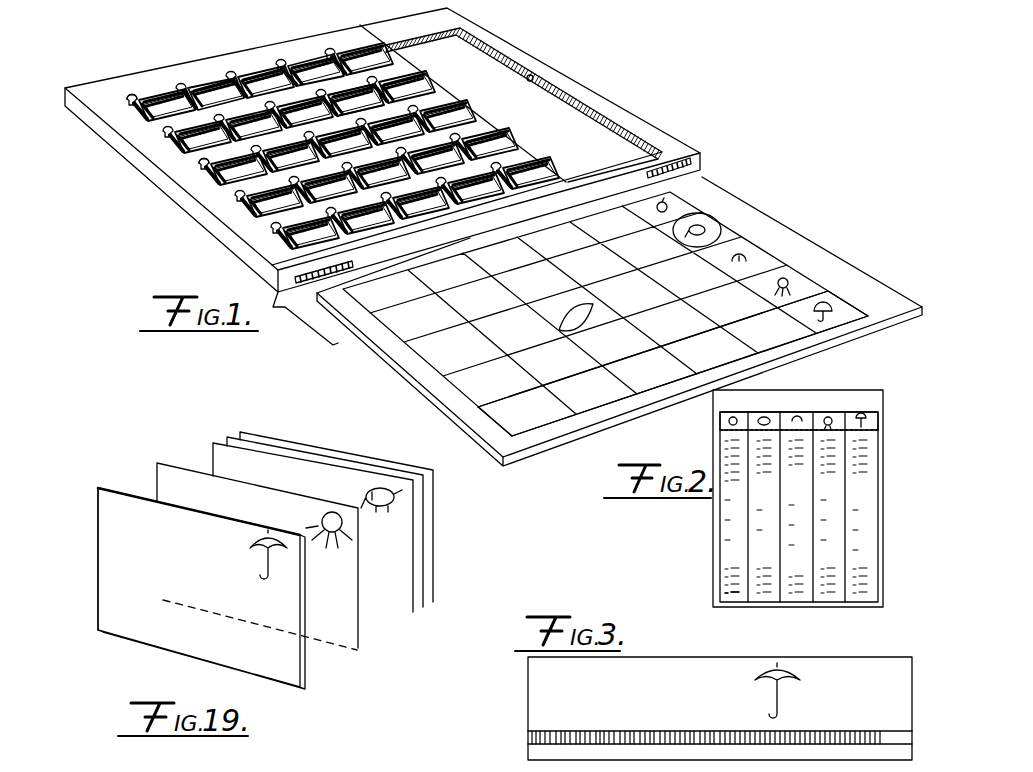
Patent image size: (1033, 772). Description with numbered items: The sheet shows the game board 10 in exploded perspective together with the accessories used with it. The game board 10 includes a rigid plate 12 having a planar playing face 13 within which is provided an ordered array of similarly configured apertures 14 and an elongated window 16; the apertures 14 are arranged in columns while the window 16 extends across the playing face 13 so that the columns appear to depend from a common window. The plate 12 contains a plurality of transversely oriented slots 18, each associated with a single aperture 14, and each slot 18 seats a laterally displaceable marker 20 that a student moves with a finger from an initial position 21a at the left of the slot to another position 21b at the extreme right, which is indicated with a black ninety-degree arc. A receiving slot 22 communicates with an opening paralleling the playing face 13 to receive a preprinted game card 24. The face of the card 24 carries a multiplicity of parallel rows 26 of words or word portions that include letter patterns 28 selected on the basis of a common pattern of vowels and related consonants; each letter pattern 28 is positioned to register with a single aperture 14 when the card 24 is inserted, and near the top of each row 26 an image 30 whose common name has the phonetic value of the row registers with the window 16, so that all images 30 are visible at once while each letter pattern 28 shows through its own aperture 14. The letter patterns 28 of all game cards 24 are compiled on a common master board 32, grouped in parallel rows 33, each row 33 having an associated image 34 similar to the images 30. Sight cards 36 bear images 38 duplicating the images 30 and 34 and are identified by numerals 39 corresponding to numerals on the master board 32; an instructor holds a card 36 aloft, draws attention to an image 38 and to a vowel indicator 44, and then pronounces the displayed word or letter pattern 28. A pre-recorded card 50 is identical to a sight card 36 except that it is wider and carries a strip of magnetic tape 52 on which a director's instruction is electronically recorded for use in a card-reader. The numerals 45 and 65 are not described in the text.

In FIG. 1, the game board 10 is at (623, 87).
In FIG. 1, the rigid plate 12 is at (682, 152).
In FIG. 1, the planar playing face 13 is at (340, 83).
In FIG. 1, the apertures 14 is at (492, 140).
In FIG. 1, the elongated window 16 is at (531, 76).
In FIG. 1, the transversely oriented slots 18 is at (285, 243).
In FIG. 1, the marker 20 is at (200, 160).
In FIG. 1, the initial position 21a is at (133, 95).
In FIG. 1, the displaced position 21b is at (300, 275).
In FIG. 1, the receiving slot 22 is at (630, 183).
In FIG. 1, the game card 24 is at (798, 232).
In FIG. 1, the parallel rows 26 is at (390, 327).
In FIG. 1, the letter patterns 28 is at (520, 440).
In FIG. 2, the letter patterns 28 is at (874, 430).
In FIG. 1, the image 30 is at (843, 297).
In FIG. 2, the master board 32 is at (705, 533).
In FIG. 2, the parallel rows 33 is at (738, 592).
In FIG. 2, the image 34 is at (856, 410).
In FIG. 19, the sight cards 36 is at (215, 452).
In FIG. 19, the images 38 is at (372, 485).
In FIG. 19, the numerals 39 is at (99, 630).
In FIG. 19, the vowel indicator 44 is at (393, 607).
In FIG. 1, the picture key 45 is at (697, 213).
In FIG. 3, the pre-recorded cards 50 is at (519, 691).
In FIG. 3, the strips of magnetic tape 52 is at (527, 736).
In FIG. 19, the card number 65 is at (231, 587).
In FIG. 3, the card number 65 is at (895, 752).